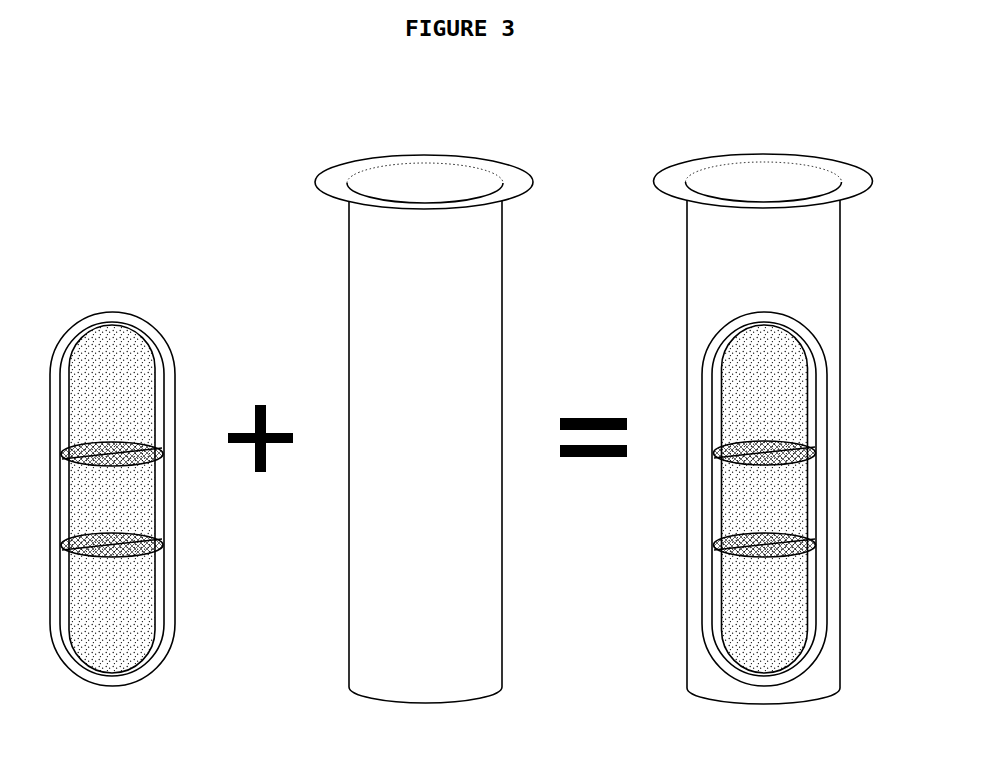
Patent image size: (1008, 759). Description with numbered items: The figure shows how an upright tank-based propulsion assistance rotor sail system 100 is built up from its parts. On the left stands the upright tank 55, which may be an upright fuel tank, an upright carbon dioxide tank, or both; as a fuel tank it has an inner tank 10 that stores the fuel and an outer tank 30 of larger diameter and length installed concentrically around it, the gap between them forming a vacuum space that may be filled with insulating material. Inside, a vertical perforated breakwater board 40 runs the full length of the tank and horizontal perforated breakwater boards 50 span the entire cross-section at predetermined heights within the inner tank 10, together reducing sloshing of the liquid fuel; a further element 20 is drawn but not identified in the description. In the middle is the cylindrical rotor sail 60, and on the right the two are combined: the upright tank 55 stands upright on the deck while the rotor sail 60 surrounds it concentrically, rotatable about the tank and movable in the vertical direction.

The upright tank-based propulsion assistance rotor sail system 100 is at (664, 149).
The rotor sail 60 is at (687, 275).
The upright tank 55 is at (706, 314).
The vertical perforated breakwater board 40 is at (745, 359).
The inner tank 10 is at (711, 392).
The second compartment 20 is at (708, 502).
The outer tank 30 is at (702, 595).
The horizontal perforated breakwater board 50 is at (720, 453).